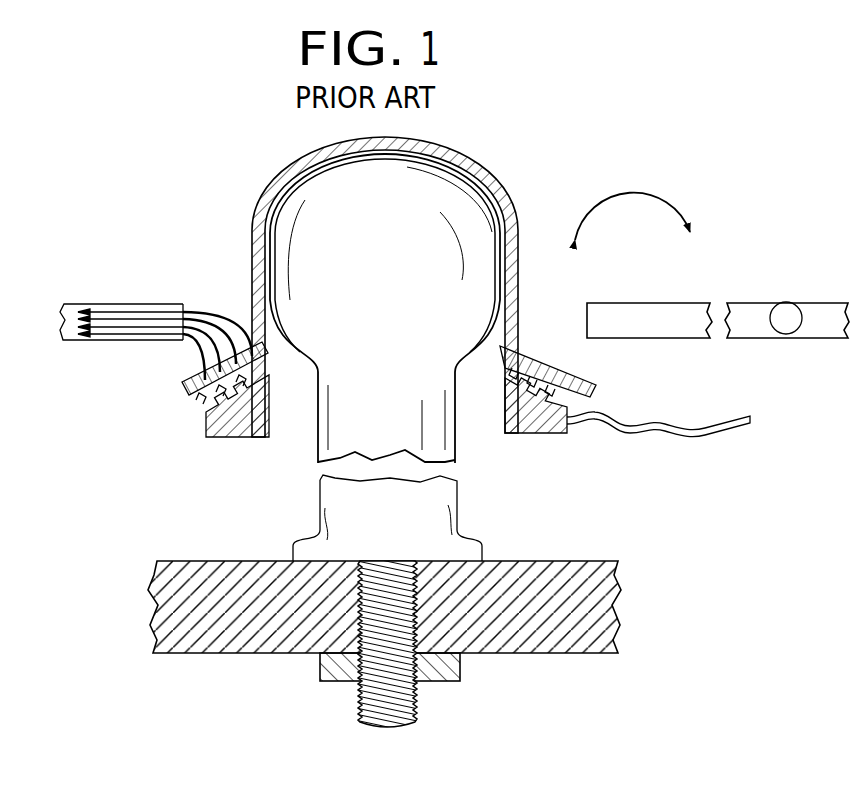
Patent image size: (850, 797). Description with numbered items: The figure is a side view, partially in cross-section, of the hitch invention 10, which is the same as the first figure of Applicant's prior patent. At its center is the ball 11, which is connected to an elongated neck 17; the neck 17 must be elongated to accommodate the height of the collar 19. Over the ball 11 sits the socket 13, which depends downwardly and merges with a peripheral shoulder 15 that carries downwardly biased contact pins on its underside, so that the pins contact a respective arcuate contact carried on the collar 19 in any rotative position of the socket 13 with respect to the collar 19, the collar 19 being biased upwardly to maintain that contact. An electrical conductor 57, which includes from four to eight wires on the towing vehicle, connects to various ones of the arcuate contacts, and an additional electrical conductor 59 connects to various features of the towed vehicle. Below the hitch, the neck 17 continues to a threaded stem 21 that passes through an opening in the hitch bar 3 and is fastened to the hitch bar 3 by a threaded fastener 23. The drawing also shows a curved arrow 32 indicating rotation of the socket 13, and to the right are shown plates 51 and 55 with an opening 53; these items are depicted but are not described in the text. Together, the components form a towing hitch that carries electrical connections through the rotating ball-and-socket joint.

The hitch invention 10 is at (228, 225).
The socket 13 is at (490, 176).
The ball 11 is at (396, 283).
The elongated neck 17 is at (308, 442).
The electrical conductor 59 is at (82, 302).
The collar 19 is at (206, 421).
The peripheral shoulder 15 is at (549, 348).
The electrical conductor 57 is at (685, 435).
The rotation direction 32 is at (655, 192).
The plate 51 is at (640, 330).
The plate 55 is at (820, 310).
The hole 53 is at (786, 325).
The hitch bar 3 is at (180, 556).
The threaded fastener 23 is at (460, 681).
The threaded stem 21 is at (358, 708).